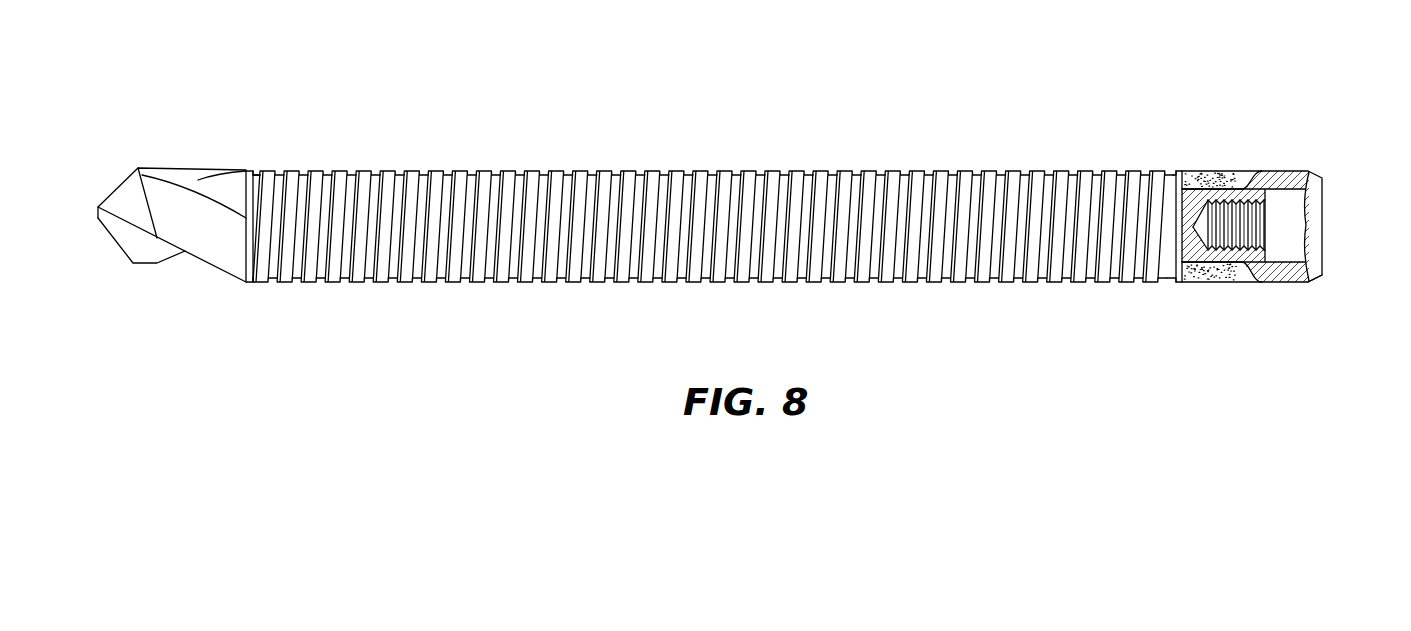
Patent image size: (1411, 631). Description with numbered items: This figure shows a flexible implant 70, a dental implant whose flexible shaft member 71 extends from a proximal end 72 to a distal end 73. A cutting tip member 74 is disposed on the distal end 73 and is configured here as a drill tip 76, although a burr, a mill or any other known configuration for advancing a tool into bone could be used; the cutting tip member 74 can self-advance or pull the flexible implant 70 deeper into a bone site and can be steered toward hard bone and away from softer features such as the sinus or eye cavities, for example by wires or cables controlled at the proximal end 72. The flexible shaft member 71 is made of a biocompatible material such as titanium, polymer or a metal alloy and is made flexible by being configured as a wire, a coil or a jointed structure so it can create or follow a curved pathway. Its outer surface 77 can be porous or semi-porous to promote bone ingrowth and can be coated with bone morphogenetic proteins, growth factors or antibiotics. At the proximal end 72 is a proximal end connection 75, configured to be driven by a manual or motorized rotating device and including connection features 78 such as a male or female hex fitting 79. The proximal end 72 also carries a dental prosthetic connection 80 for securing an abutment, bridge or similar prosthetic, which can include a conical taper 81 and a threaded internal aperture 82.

The flexible implant 70 is at (184, 52).
The flexible shaft member 71 is at (1175, 140).
The proximal end 72 is at (1308, 281).
The distal end 73 is at (97, 207).
The cutting tip member 74 is at (95, 140).
The proximal end connection 75 is at (1182, 140).
The drill tip 76 is at (145, 267).
The outer surface 77 is at (547, 282).
The connection features 78 is at (1320, 126).
The hex fitting 79 is at (1285, 227).
The dental prosthetic connection 80 is at (1182, 304).
The conical taper 81 is at (1313, 209).
The threaded internal aperture 82 is at (1242, 189).